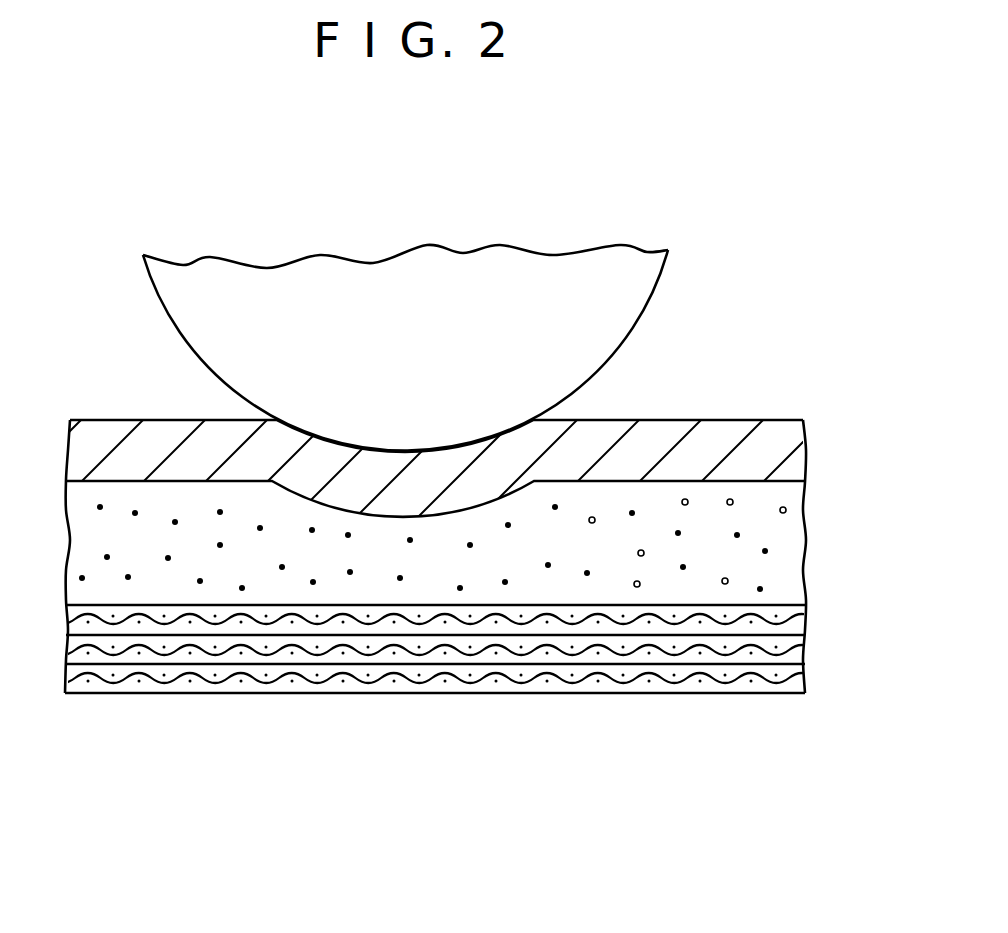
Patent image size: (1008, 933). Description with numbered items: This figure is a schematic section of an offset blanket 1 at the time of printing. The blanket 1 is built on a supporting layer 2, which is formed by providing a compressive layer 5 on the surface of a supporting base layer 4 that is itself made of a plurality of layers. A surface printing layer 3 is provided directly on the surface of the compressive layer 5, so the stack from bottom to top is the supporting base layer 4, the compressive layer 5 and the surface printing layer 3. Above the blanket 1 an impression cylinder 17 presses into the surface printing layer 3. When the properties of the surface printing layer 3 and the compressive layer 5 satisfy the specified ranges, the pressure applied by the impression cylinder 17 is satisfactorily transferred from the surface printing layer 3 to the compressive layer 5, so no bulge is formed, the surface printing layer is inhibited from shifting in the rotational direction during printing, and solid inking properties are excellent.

The blanket 1 is at (120, 393).
The supporting layer 2 is at (833, 483).
The surface printing layer 3 is at (713, 443).
The supporting base layer 4 is at (542, 627).
The compressive layer 5 is at (600, 575).
The impression cylinder 17 is at (613, 312).